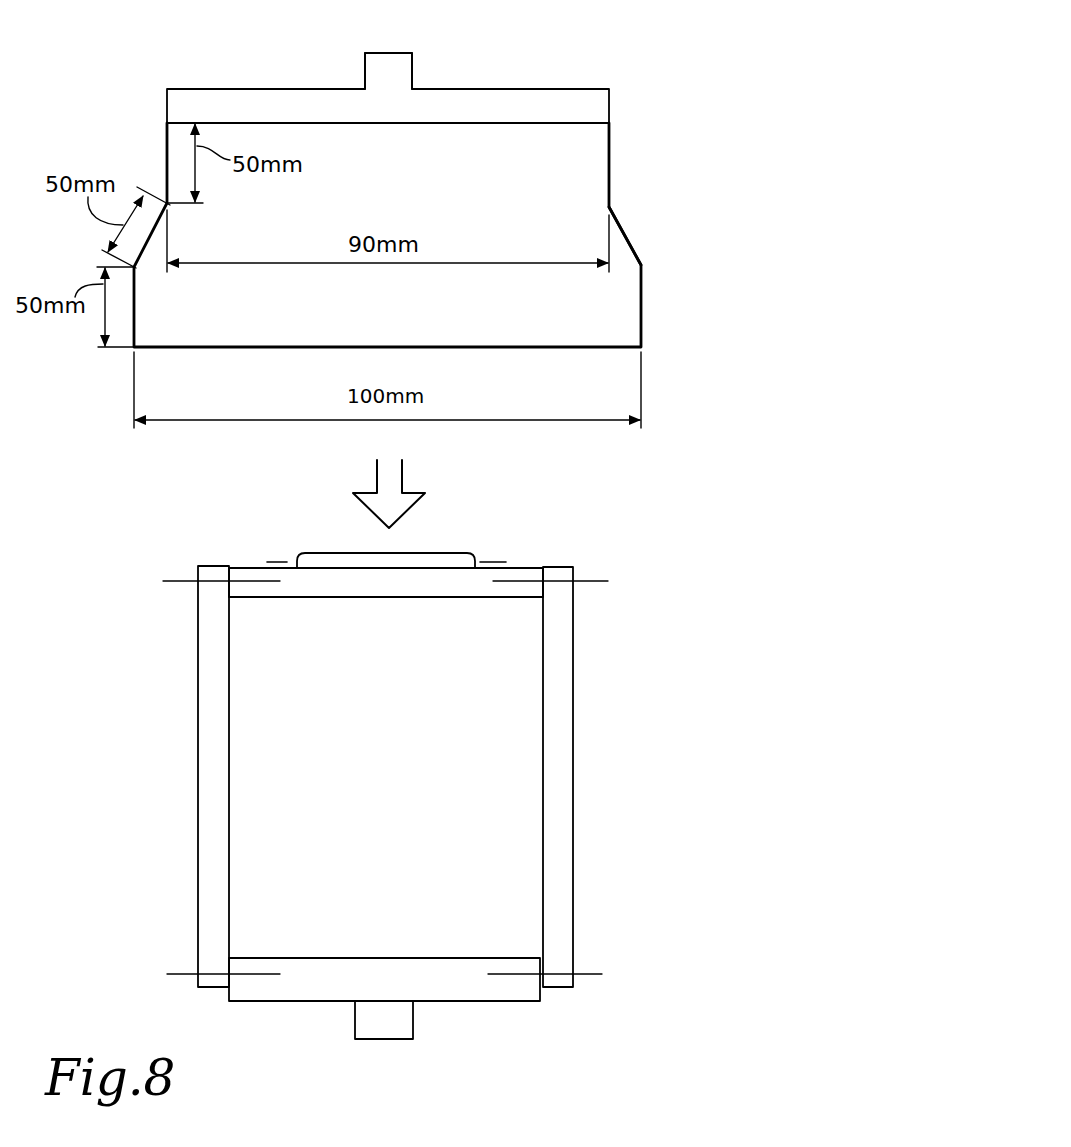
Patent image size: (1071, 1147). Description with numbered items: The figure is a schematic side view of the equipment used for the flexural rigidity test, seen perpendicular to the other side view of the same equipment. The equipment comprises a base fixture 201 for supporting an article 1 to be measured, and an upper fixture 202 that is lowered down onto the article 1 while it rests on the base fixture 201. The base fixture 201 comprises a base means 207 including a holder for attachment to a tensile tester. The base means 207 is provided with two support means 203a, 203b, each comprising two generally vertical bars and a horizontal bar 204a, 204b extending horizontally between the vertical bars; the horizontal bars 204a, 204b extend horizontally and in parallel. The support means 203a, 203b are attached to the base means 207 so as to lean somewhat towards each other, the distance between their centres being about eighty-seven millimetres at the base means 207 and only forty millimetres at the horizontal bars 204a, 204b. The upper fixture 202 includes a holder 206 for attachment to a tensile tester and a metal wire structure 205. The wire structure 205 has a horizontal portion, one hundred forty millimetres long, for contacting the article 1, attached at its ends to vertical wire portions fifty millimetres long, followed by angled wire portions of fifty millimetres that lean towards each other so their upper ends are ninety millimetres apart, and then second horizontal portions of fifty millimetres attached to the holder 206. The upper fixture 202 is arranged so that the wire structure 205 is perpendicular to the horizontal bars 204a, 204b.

The article 1 is at (489, 527).
The base fixture 201 is at (423, 755).
The upper fixture 202 is at (669, 84).
The support means 203a is at (213, 776).
The support means 203b is at (563, 770).
The horizontal bar 204a is at (386, 582).
The horizontal bar 204b is at (362, 587).
The metal wire structure 205 is at (613, 213).
The holder 206 is at (440, 97).
The base means 207 is at (387, 970).